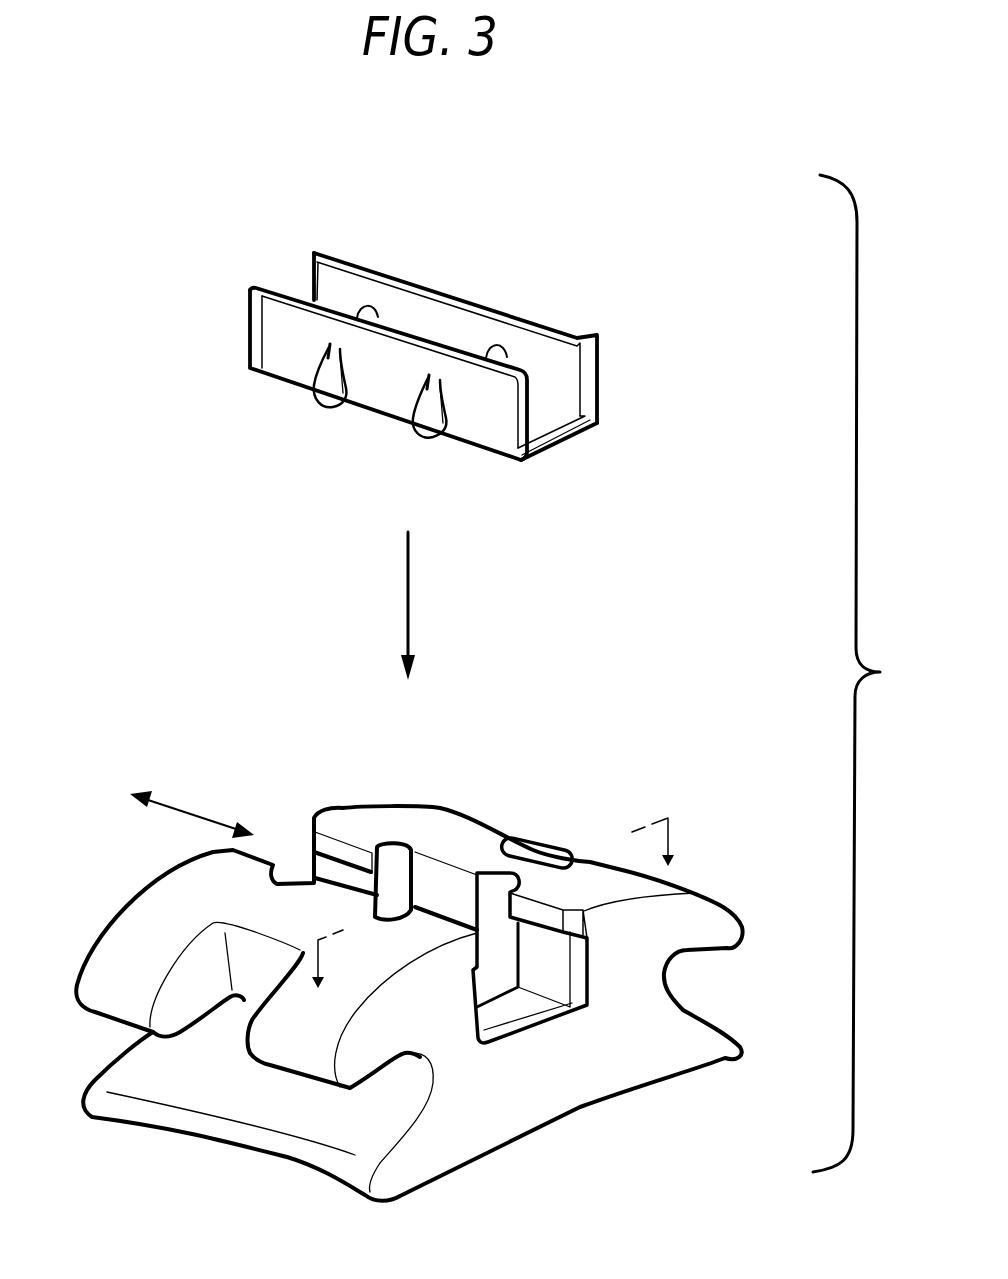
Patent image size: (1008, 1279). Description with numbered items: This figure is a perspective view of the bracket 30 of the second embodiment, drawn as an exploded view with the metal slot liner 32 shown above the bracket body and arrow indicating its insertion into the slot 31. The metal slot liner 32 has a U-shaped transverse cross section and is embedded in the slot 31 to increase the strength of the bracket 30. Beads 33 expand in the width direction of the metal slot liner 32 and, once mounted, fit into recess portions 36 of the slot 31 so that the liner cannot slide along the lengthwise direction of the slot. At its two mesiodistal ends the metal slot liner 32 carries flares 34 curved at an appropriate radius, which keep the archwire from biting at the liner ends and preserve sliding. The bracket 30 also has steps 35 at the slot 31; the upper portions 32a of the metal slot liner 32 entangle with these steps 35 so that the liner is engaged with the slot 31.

The bracket 30 is at (869, 673).
The slot 31 is at (409, 978).
The metal slot liner 32 is at (450, 363).
The upper portions 32a is at (457, 298).
The beads 33 is at (333, 407).
The flares 34 is at (567, 430).
The steps 35 is at (547, 930).
The recess portions 36 is at (392, 853).